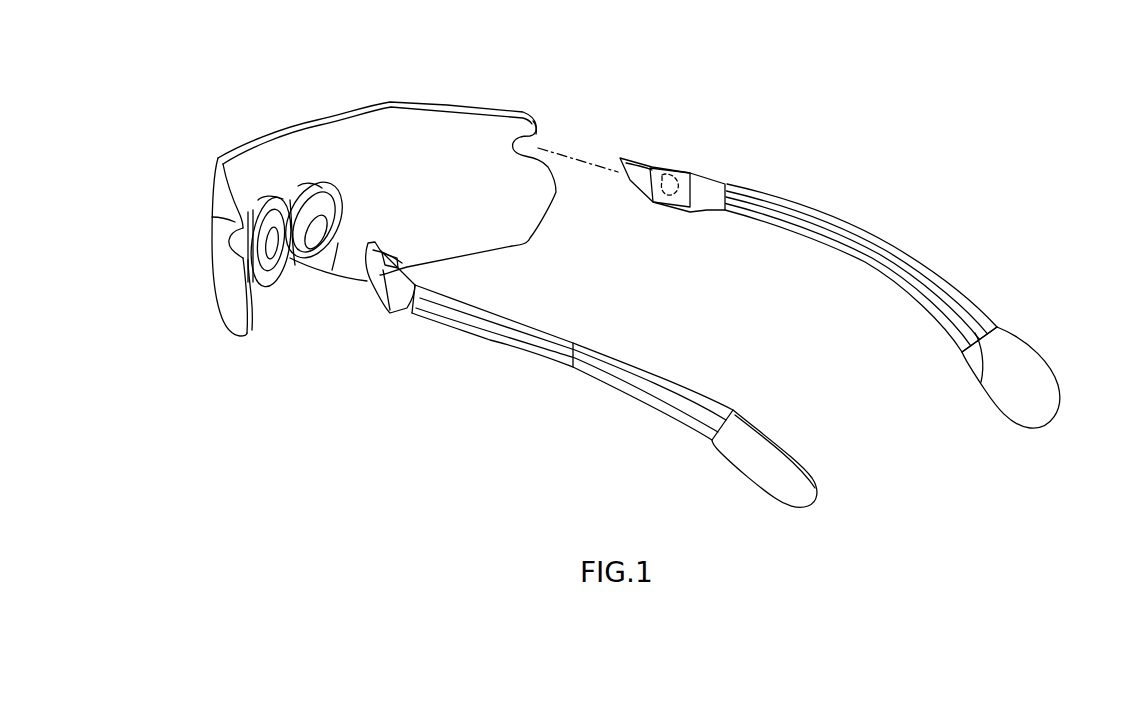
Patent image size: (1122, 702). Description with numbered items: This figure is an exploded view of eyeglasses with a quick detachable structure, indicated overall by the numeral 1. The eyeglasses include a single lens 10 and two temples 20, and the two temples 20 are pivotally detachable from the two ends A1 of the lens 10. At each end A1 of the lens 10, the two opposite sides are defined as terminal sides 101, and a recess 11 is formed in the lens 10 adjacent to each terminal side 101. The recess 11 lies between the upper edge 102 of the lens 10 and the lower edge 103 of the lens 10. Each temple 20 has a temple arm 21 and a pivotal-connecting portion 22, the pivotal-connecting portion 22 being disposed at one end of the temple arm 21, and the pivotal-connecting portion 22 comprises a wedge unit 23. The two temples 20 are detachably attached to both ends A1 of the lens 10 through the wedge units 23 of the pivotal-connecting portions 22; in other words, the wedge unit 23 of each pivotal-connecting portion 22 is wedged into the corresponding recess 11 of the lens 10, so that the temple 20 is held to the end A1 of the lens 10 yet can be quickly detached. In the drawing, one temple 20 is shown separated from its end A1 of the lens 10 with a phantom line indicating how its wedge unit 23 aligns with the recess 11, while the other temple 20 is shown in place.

The eyeglasses 1 is at (194, 71).
The lens 10 is at (385, 192).
The terminal side 101 is at (538, 122).
The upper edge 102 is at (416, 102).
The lower edge 103 is at (494, 246).
The recess 11 is at (518, 133).
The temple 20 is at (692, 306).
The temple arm 21 is at (720, 327).
The pivotal-connecting portion 22 is at (386, 298).
The wedge unit 23 is at (667, 170).
The end of the lens A1 is at (545, 100).